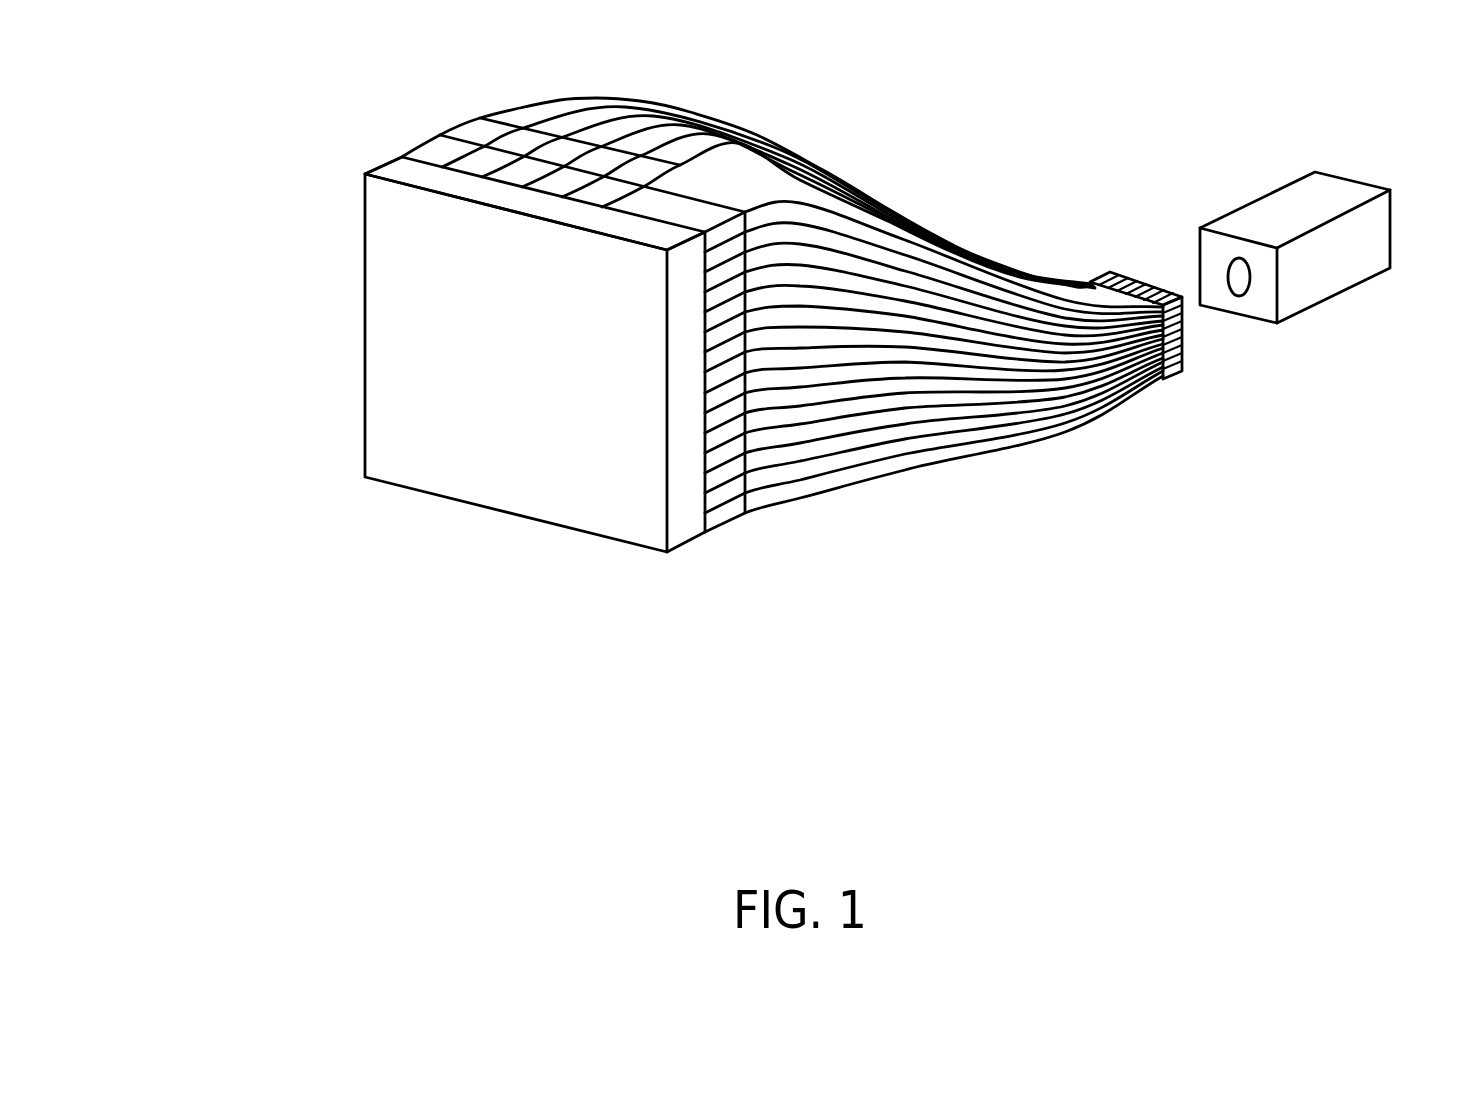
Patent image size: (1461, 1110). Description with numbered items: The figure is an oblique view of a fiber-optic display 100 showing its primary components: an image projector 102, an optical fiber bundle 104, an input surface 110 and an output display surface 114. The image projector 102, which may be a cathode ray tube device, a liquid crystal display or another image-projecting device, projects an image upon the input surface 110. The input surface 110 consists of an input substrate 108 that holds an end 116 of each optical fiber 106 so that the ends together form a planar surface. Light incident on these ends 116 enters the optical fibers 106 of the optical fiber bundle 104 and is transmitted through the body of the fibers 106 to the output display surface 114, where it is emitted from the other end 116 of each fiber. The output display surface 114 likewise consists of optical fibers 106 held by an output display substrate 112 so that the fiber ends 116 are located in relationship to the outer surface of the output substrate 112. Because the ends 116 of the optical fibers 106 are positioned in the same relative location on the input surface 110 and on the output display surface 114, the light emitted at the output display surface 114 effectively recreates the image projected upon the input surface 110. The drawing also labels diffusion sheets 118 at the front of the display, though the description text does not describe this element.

The fiber-optic display 100 is at (973, 532).
The image projector 102 is at (1295, 210).
The optical fiber bundle 104 is at (878, 195).
The optical fiber 106 is at (497, 108).
The input substrate 108 is at (1105, 280).
The input surface 110 is at (1183, 342).
The output display substrate 112 is at (723, 523).
The output display surface 114 is at (433, 163).
The end of optical fiber 116 is at (708, 498).
The diffusion sheets 118 is at (557, 477).